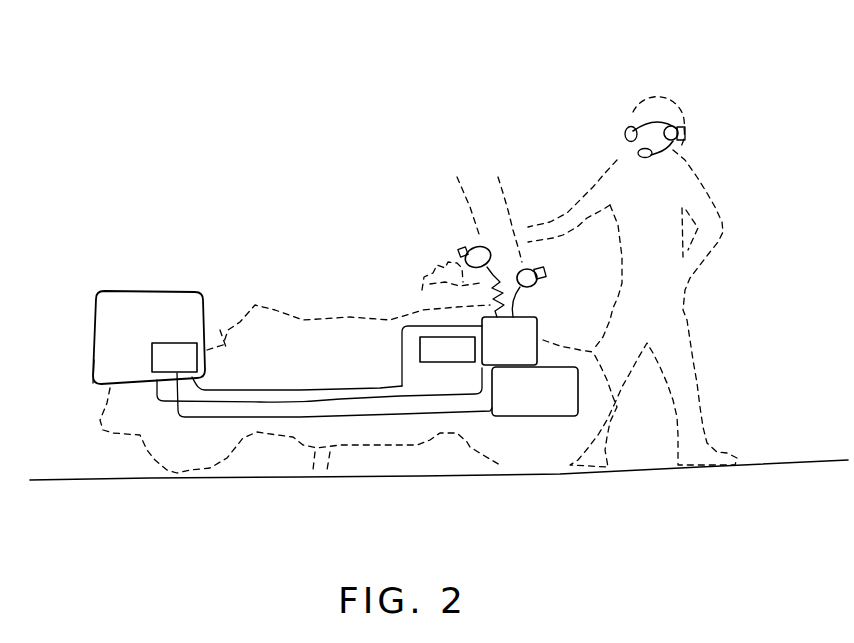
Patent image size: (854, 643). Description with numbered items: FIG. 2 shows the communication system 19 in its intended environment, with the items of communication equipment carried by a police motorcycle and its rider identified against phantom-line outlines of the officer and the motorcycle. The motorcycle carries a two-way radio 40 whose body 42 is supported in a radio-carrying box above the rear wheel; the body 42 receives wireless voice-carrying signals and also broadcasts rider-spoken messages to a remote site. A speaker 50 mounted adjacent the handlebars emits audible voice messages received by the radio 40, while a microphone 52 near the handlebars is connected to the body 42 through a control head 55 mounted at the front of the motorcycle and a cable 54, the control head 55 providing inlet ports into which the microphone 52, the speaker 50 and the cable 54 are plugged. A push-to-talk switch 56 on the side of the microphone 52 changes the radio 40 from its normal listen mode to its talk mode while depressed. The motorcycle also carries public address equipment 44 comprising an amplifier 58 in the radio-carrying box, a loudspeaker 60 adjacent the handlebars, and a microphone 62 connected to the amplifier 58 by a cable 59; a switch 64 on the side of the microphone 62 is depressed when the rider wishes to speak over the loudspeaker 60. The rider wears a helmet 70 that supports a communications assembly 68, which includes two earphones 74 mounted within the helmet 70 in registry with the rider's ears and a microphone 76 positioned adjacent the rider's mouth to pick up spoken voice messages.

The communication system 19 is at (744, 306).
The two-way radio 40 is at (107, 347).
The body 42 is at (97, 367).
The public address (PA) equipment 44 is at (650, 493).
The speaker 50 is at (420, 349).
The microphone 52 is at (543, 288).
The cable 54 is at (263, 401).
The control head 55 is at (537, 340).
The push-to-talk (PTT) switch 56 is at (543, 270).
The amplifier 58 is at (175, 345).
The cable 59 is at (387, 386).
The loudspeaker 60 is at (537, 416).
The microphone 62 is at (483, 247).
The switch 64 is at (463, 247).
The communications assembly 68 is at (686, 133).
The helmet 70 is at (678, 121).
The earphones 74 is at (633, 123).
The microphone 76 is at (638, 155).